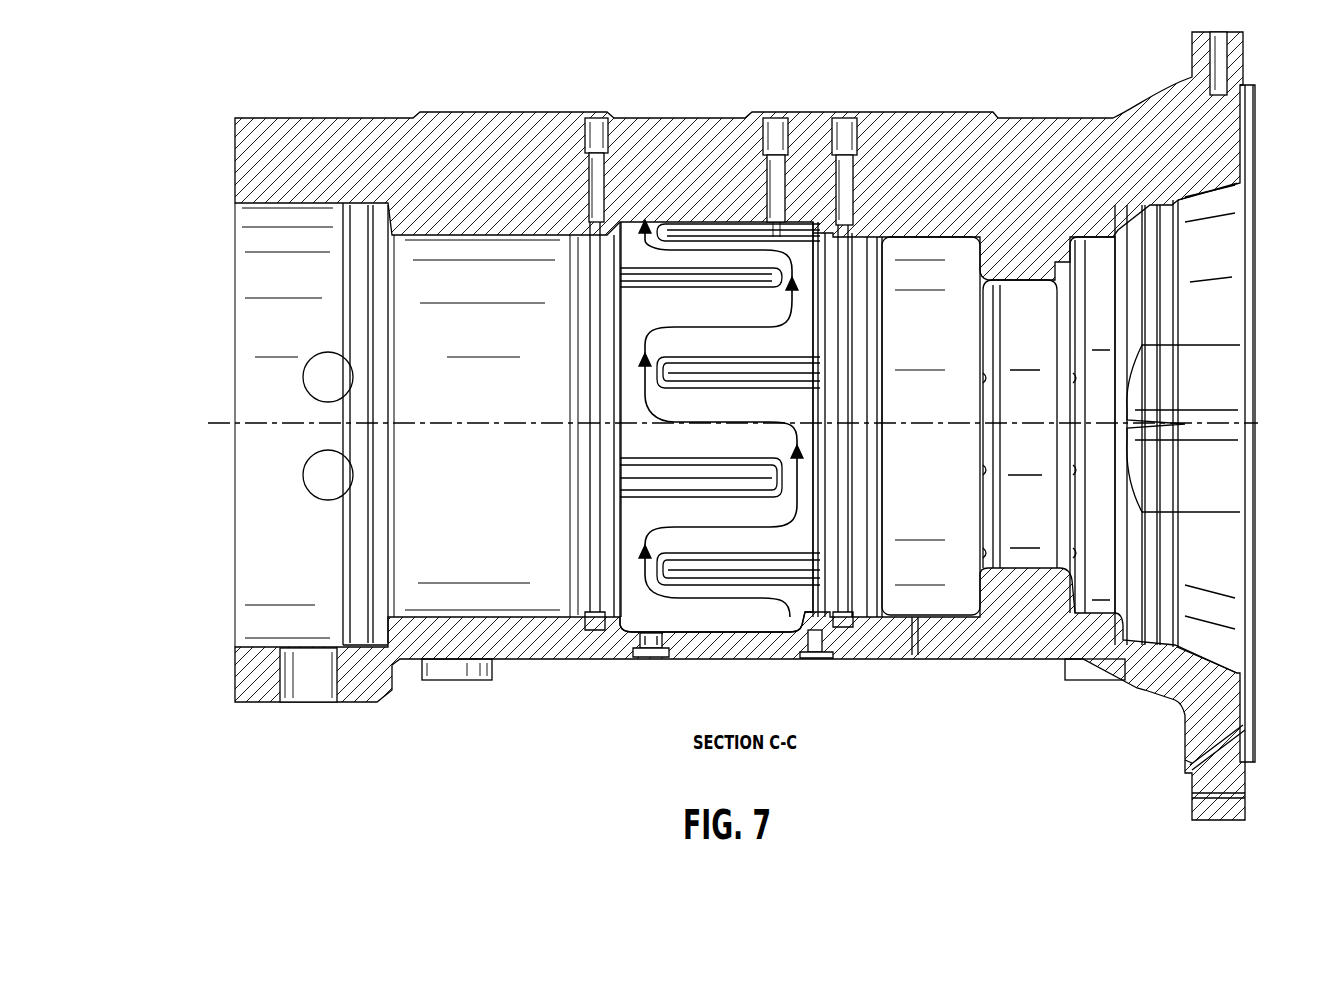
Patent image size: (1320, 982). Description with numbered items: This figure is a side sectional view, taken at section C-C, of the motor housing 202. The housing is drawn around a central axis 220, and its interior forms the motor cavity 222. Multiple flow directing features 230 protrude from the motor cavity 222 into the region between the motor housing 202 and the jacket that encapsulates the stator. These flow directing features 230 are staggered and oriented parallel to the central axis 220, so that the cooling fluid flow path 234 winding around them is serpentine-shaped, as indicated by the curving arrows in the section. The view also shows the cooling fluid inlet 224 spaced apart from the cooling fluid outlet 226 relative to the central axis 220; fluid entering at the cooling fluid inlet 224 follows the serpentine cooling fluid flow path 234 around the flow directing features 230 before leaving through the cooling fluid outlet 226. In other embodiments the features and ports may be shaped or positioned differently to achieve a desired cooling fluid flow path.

The motor housing 202 is at (170, 117).
The central axis 220 is at (714, 424).
The motor cavity 222 is at (467, 282).
The cooling fluid inlet 224 is at (648, 657).
The cooling fluid outlet 226 is at (778, 112).
The flow directing features 230 is at (767, 383).
The cooling fluid flow path 234 is at (723, 253).